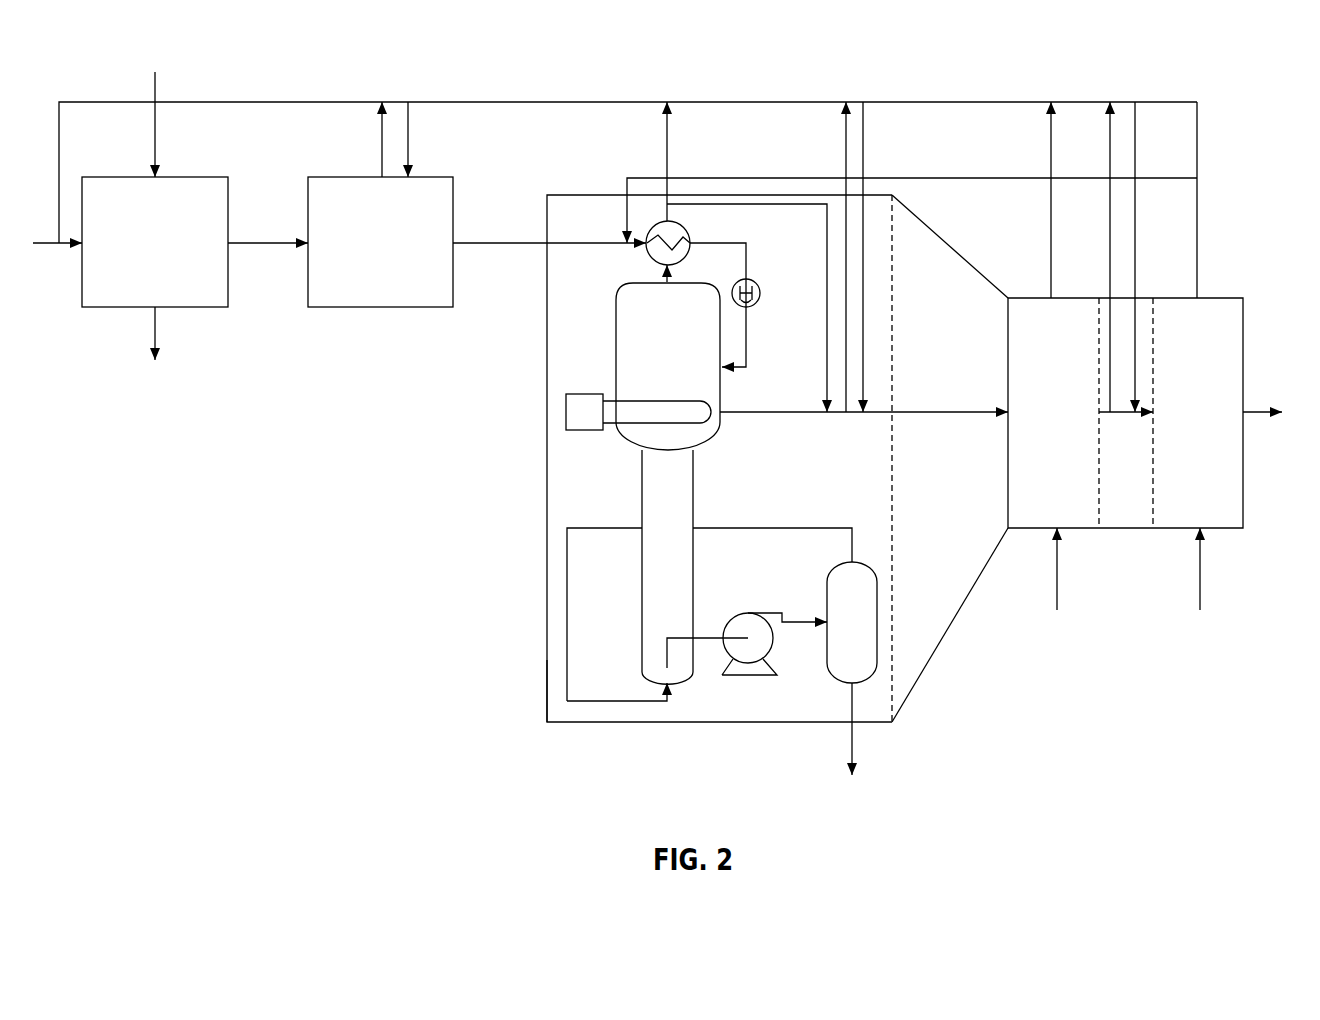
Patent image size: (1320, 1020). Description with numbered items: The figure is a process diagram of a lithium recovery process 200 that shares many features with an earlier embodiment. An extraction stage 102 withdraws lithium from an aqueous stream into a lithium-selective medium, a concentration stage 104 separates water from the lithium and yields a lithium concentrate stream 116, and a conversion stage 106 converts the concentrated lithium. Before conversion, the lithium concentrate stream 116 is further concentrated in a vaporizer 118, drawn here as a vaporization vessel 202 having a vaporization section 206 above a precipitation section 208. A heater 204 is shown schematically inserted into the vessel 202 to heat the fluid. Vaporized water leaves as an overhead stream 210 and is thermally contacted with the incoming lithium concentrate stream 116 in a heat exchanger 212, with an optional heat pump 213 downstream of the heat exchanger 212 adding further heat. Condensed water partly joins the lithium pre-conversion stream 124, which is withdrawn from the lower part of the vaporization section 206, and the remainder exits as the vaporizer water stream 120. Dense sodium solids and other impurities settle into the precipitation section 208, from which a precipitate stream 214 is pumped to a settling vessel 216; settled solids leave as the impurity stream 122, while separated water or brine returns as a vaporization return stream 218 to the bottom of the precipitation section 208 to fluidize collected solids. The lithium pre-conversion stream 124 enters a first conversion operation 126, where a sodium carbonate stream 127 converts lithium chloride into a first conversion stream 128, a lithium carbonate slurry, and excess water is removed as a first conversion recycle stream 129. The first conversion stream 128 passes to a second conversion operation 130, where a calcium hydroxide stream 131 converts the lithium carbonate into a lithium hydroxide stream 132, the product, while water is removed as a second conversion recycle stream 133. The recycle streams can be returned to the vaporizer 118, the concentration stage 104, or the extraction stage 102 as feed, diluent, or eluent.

The lithium recovery process 200 is at (342, 700).
The extraction stage 102 is at (176, 257).
The concentration stage 104 is at (403, 257).
The conversion stage 106 is at (922, 217).
The lithium concentrate stream 116 is at (502, 240).
The vaporizer 118 is at (547, 692).
The vaporizer water stream 120 is at (663, 162).
The impurity stream 122 is at (848, 740).
The lithium pre-conversion stream 124 is at (950, 402).
The first conversion operation 126 is at (1076, 427).
The sodium carbonate stream 127 is at (1058, 592).
The first conversion stream 128 is at (1127, 415).
The first conversion recycle stream 129 is at (1047, 252).
The second conversion operation 130 is at (1219, 427).
The calcium hydroxide stream 131 is at (1203, 582).
The lithium hydroxide stream 132 is at (1263, 418).
The second conversion recycle stream 133 is at (1200, 246).
The vaporization vessel 202 is at (746, 474).
The heater 204 is at (565, 414).
The vaporization section 206 is at (616, 362).
The precipitation section 208 is at (642, 505).
The overhead stream 210 is at (663, 280).
The heat exchanger 212 is at (690, 240).
The heat pump 213 is at (752, 305).
The precipitate stream 214 is at (706, 632).
The settling vessel 216 is at (838, 682).
The vaporization return stream 218 is at (567, 615).